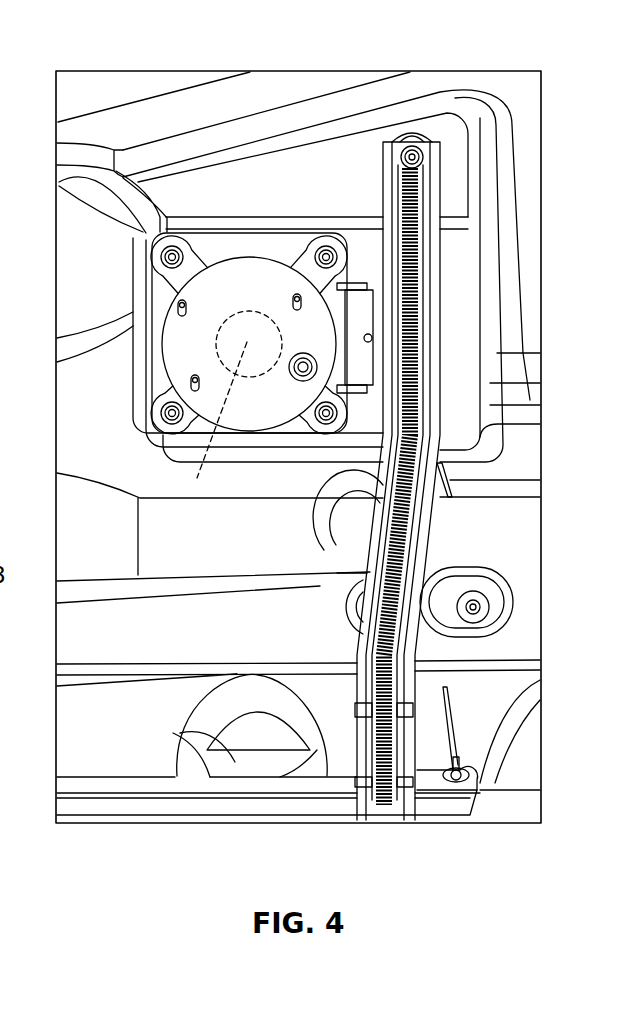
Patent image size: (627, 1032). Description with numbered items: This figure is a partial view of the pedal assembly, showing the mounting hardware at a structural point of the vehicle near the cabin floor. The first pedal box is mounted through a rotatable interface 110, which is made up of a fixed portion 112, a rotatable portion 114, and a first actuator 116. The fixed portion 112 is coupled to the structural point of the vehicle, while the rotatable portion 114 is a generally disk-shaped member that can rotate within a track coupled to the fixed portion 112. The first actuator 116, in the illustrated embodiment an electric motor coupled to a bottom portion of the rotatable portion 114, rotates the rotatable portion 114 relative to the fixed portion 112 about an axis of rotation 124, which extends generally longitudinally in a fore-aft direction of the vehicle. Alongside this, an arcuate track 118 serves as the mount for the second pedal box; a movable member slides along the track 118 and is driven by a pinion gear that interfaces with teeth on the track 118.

The rotatable interface 110 is at (157, 233).
The fixed portion 112 is at (147, 415).
The rotatable portion 114 is at (257, 277).
The first actuator 116 is at (248, 377).
The arcuate track 118 is at (420, 253).
The axis of rotation 124 is at (197, 476).